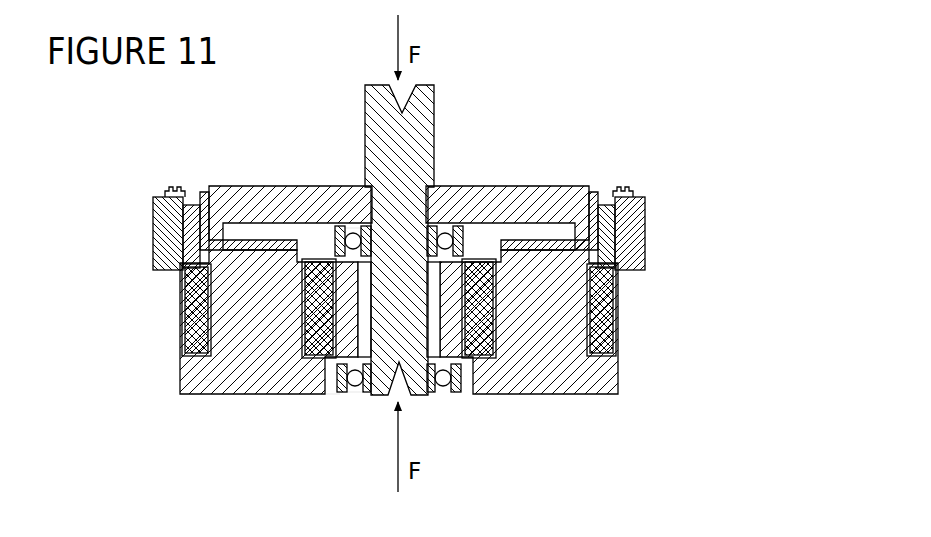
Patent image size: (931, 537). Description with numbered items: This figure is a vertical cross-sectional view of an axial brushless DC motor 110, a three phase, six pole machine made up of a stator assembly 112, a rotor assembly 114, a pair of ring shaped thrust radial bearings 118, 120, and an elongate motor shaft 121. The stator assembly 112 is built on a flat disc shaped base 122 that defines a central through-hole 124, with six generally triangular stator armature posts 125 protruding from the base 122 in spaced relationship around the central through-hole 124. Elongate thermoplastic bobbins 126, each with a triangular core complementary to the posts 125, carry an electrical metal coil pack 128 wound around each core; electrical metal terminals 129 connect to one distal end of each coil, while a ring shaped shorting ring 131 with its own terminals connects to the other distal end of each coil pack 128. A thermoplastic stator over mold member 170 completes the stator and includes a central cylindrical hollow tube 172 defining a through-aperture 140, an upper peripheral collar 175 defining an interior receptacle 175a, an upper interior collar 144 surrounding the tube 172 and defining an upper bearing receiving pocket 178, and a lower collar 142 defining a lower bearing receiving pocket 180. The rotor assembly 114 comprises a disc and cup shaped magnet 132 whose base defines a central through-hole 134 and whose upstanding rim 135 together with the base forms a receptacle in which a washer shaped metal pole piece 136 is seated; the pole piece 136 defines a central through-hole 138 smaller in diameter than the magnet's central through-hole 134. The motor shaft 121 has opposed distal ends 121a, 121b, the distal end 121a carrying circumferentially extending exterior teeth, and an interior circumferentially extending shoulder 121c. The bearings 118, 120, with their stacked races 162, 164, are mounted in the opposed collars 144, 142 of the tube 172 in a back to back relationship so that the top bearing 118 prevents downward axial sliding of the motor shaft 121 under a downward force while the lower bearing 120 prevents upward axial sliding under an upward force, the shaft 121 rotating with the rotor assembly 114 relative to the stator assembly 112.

The axial brushless DC motor 110 is at (634, 95).
The stator assembly 112 is at (606, 401).
The rotor assembly 114 is at (539, 185).
The thrust radial bearing 118 is at (362, 258).
The thrust radial bearing 120 is at (357, 401).
The motor shaft 121 is at (440, 111).
The distal end 121a is at (423, 105).
The distal end 121b is at (412, 392).
The interior circumferentially extending shoulder 121c is at (440, 200).
The base 122 is at (182, 382).
The central through-hole 124 is at (330, 393).
The stator armature posts 125 is at (233, 310).
The bobbins 126 is at (185, 283).
The coil pack 128 is at (183, 335).
The electrical metal terminals 129 is at (163, 222).
The shorting ring 131 is at (243, 243).
The magnet 132 is at (599, 189).
The central through-hole 134 is at (205, 382).
The rim 135 is at (598, 188).
The pole piece 136 is at (522, 190).
The central through-hole 138 is at (367, 222).
The through-aperture 140 is at (398, 366).
The lower collar 142 is at (345, 393).
The upper interior collar 144 is at (318, 238).
The bearing stacked races 162 is at (452, 232).
The bearing stacked races 164 is at (482, 225).
The stator over mold member 170 is at (652, 259).
The tube 172 is at (462, 396).
The upper peripheral collar 175 is at (646, 214).
The interior receptacle 175a is at (205, 212).
The upper bearing receiving pocket 178 is at (350, 232).
The lower bearing receiving pocket 180 is at (345, 398).